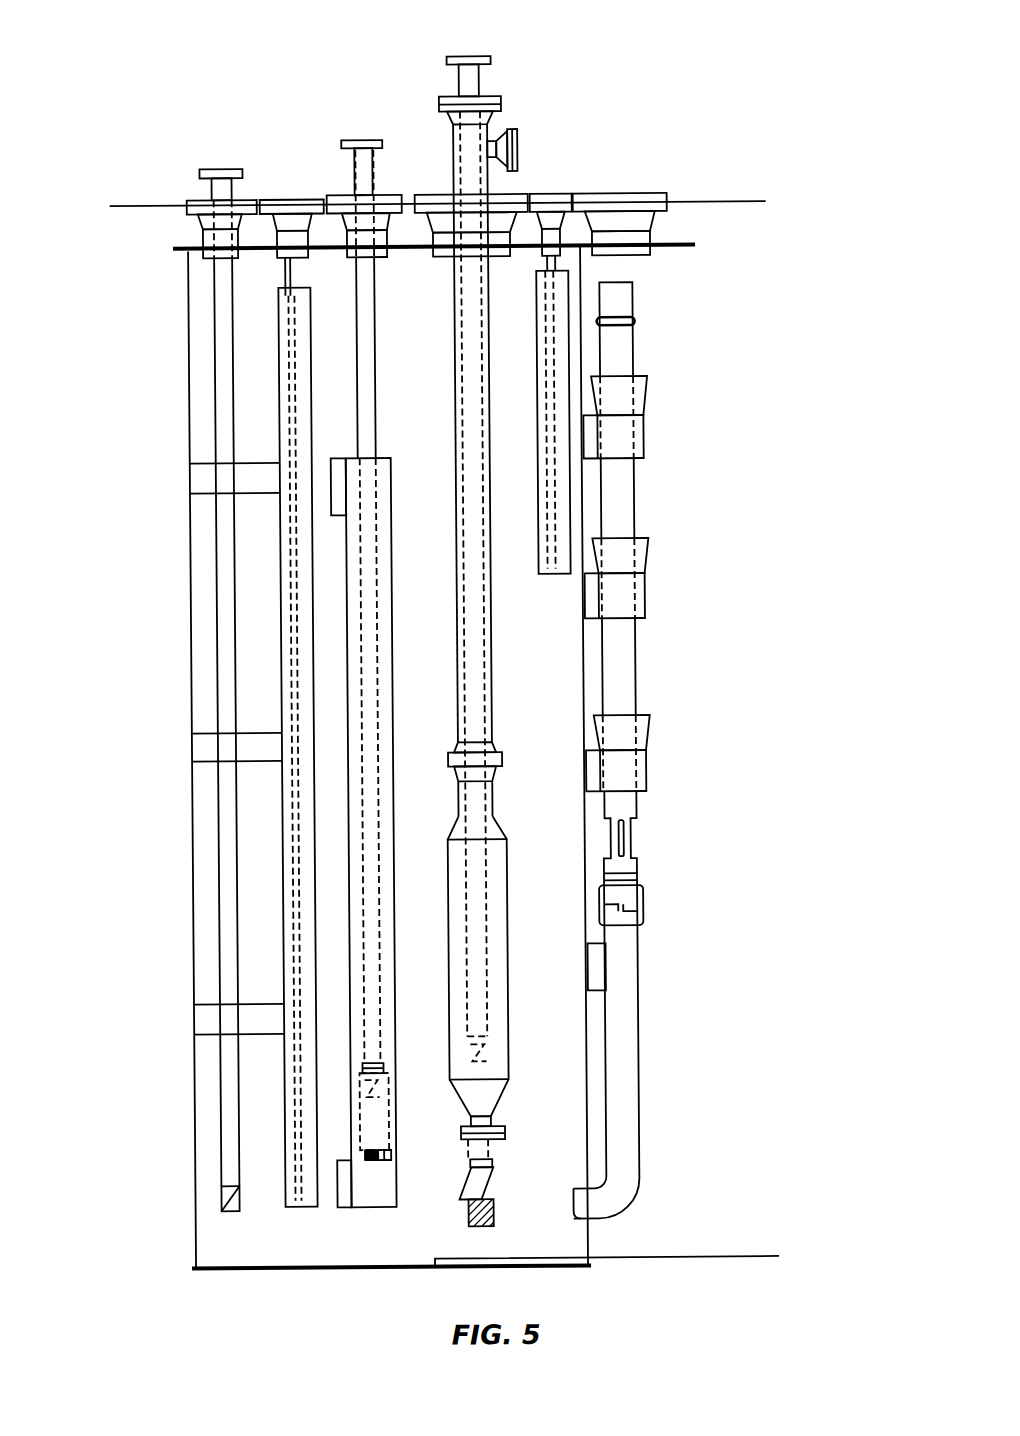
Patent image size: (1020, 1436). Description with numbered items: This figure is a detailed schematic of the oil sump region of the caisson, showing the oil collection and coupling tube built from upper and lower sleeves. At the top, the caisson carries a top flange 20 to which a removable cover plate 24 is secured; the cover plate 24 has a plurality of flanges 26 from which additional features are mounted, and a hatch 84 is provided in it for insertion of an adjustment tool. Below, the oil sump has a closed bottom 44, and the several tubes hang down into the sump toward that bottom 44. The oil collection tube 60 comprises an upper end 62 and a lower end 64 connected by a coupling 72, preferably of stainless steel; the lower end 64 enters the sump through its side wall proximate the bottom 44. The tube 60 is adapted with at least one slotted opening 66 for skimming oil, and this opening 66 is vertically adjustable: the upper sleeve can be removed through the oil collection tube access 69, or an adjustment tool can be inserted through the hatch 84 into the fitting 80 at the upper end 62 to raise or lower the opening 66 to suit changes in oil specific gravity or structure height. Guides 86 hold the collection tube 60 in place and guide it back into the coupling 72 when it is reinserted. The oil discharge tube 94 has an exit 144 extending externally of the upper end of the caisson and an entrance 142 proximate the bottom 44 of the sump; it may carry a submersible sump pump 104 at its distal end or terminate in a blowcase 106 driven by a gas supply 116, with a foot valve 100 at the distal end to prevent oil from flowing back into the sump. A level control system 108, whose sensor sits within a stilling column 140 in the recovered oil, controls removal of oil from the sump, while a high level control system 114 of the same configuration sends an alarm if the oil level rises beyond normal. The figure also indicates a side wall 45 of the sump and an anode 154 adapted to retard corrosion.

The top flange 20 is at (201, 760).
The removable cover plate 24 is at (402, 228).
The flanges 26 is at (412, 181).
The bottom 44 is at (391, 1295).
The side wall 45 is at (551, 755).
The oil collection tube 60 is at (648, 586).
The upper end 62 is at (647, 369).
The lower end 64 is at (641, 1071).
The slotted opening 66 is at (653, 838).
The oil collection tube access 69 is at (659, 262).
The coupling 72 is at (657, 888).
The fitting 80 is at (652, 309).
The hatch 84 is at (628, 189).
The guides 86 is at (653, 752).
The oil discharge tube 94 is at (446, 587).
The foot valve 100 is at (182, 701).
The submersible sump pump 104 is at (415, 1117).
The blowcase 106 is at (521, 988).
The level control system 108 is at (237, 675).
The high level control system 114 is at (631, 359).
The gas supply 116 is at (543, 123).
The stilling column 140 is at (240, 748).
The entrance 142 is at (398, 1200).
The exit 144 is at (374, 104).
The anode 154 is at (635, 1234).